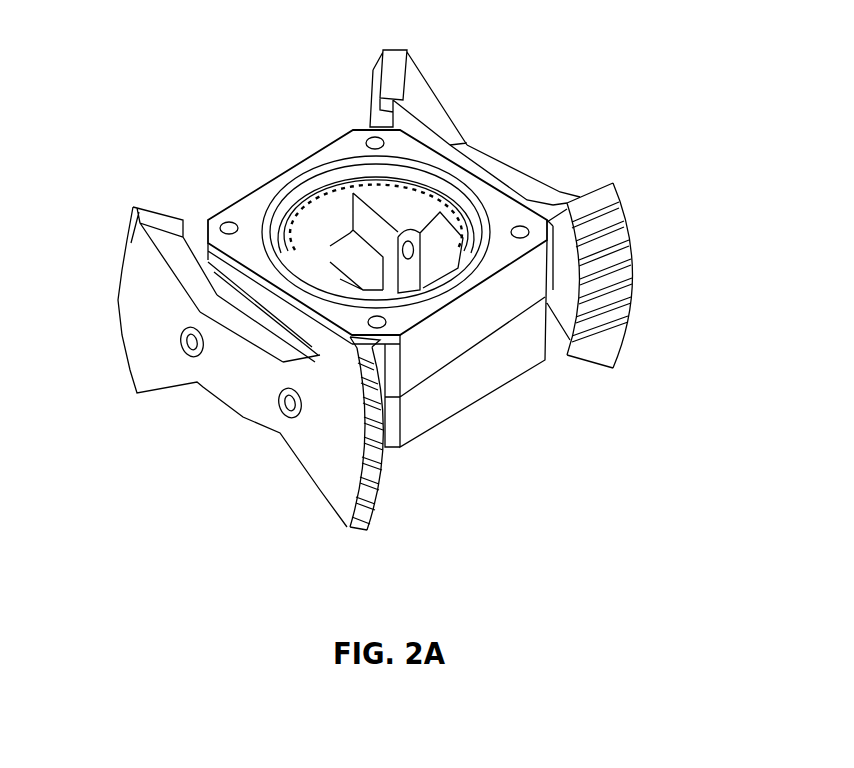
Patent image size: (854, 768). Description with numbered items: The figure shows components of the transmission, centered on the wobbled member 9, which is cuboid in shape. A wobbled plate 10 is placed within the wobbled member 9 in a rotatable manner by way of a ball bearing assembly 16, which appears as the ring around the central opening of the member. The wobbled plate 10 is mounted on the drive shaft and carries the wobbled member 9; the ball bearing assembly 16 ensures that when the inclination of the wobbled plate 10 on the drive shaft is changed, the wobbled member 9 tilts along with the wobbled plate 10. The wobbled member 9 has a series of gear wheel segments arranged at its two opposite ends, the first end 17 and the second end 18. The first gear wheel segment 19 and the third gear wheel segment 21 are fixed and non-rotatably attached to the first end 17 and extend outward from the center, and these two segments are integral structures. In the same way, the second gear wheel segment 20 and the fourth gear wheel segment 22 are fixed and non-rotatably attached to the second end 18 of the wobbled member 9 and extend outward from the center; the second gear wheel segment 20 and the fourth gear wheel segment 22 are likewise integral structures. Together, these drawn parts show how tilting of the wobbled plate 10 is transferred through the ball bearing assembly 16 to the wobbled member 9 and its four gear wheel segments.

The wobbled member 9 is at (490, 323).
The wobbled plate 10 is at (421, 210).
The ball bearing assembly 16 is at (317, 183).
The first end 17 is at (503, 186).
The second end 18 is at (290, 288).
The first gear wheel segment 19 is at (407, 73).
The second gear wheel segment 20 is at (140, 262).
The third gear wheel segment 21 is at (620, 283).
The fourth gear wheel segment 22 is at (377, 507).